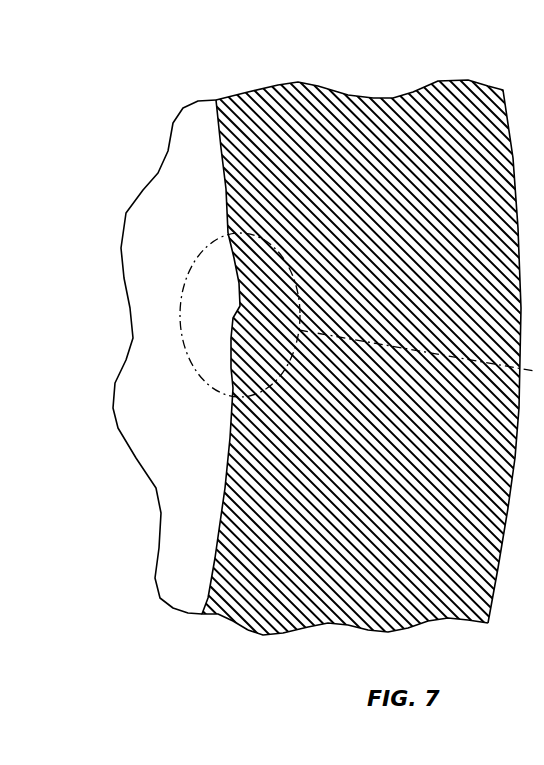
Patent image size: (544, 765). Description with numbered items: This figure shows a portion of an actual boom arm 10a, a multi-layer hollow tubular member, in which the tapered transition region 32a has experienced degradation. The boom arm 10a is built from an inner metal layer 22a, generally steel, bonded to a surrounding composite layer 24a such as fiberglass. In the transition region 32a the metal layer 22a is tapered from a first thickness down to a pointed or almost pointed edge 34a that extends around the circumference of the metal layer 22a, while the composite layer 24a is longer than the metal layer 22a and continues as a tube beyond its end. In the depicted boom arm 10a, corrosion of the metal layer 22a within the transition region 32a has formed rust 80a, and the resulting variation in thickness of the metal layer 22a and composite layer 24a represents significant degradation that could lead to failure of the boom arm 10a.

The boom arm 10a is at (326, 57).
The metal layer 22a is at (292, 603).
The composite layer 24a is at (104, 509).
The transition region 32a is at (227, 610).
The pointed edge 34a is at (218, 181).
The rust 80a is at (210, 313).